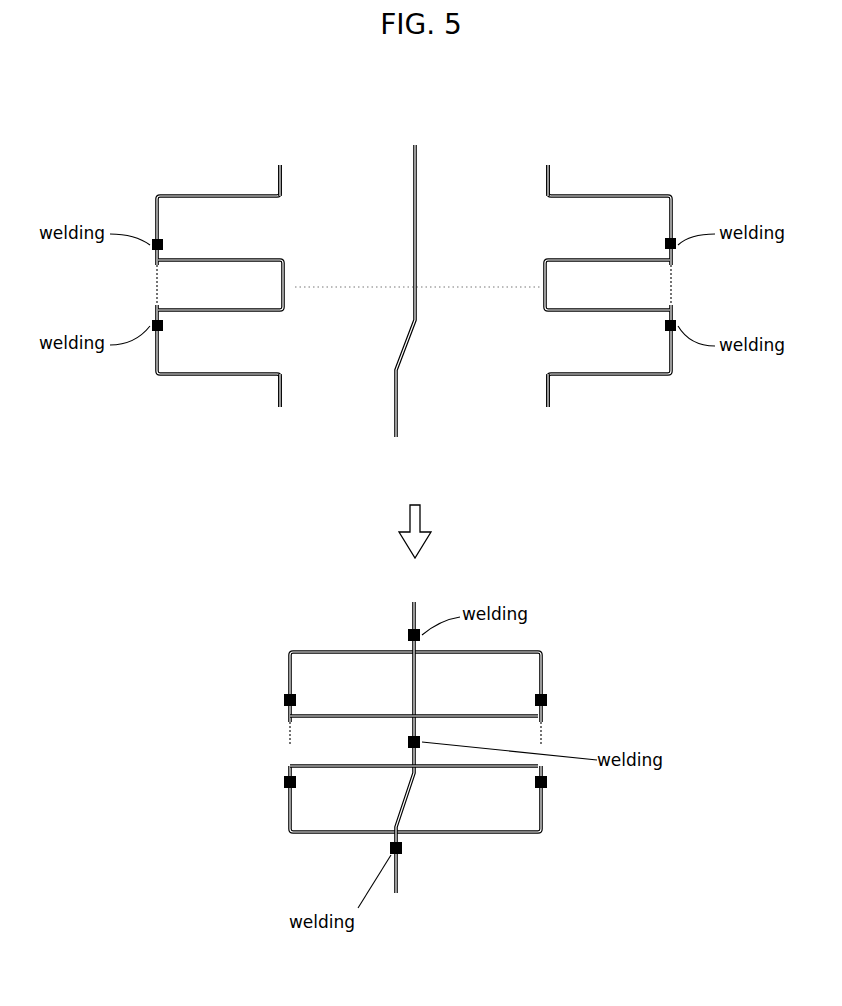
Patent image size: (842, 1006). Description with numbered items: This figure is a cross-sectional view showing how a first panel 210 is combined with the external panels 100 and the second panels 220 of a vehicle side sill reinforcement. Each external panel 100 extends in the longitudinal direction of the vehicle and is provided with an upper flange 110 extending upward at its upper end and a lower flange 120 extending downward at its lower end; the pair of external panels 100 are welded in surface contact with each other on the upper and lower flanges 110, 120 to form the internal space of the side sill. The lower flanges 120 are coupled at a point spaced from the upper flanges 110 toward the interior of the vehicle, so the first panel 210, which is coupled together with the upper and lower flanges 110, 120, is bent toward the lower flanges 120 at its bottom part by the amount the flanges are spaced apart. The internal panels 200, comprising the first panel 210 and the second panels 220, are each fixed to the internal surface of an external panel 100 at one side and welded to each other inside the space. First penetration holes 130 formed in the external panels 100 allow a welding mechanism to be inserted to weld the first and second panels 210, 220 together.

The external panel 100 is at (216, 190).
The upper flange 110 is at (283, 178).
The lower flange 120 is at (281, 405).
The first penetration hole 130 is at (155, 288).
The internal panel 200 is at (522, 899).
The first panel 210 is at (418, 150).
The second panel 220 is at (285, 260).